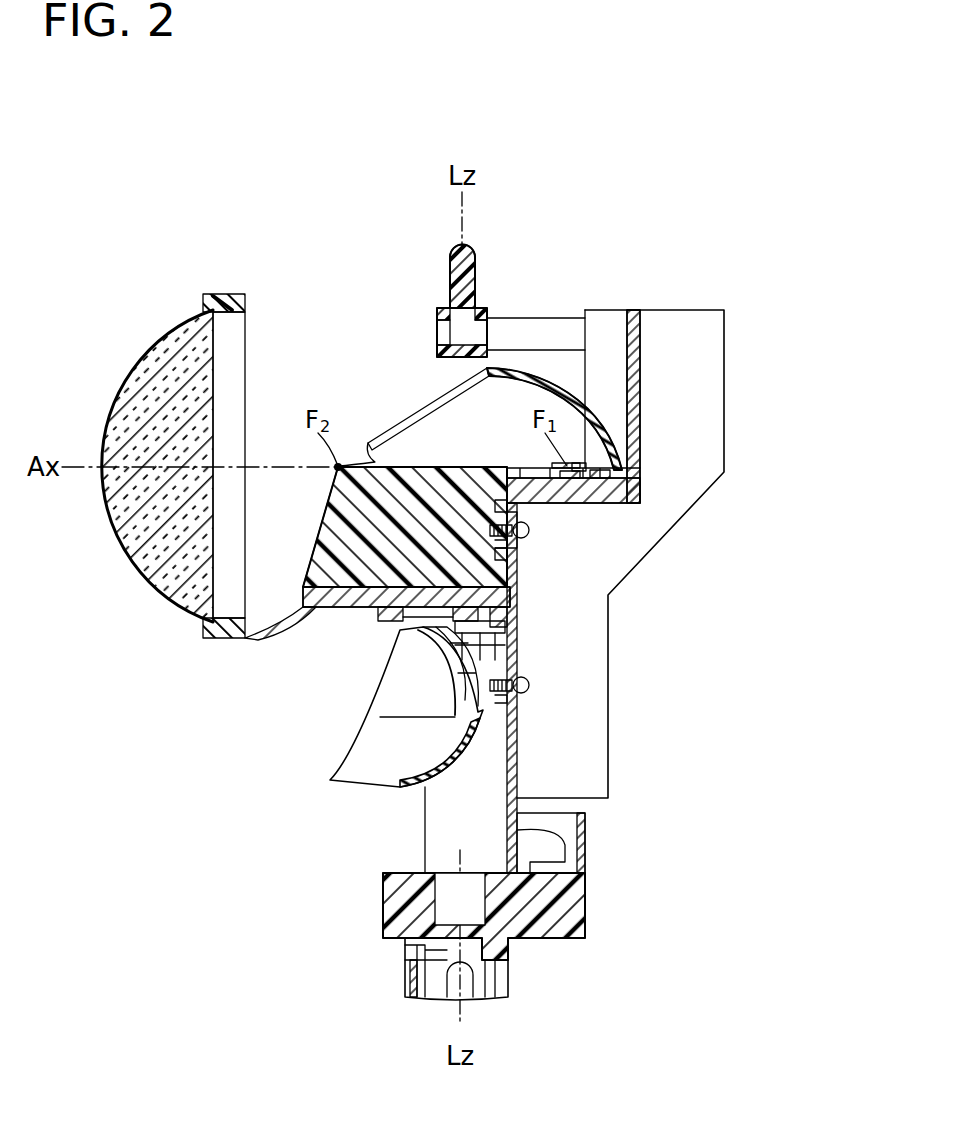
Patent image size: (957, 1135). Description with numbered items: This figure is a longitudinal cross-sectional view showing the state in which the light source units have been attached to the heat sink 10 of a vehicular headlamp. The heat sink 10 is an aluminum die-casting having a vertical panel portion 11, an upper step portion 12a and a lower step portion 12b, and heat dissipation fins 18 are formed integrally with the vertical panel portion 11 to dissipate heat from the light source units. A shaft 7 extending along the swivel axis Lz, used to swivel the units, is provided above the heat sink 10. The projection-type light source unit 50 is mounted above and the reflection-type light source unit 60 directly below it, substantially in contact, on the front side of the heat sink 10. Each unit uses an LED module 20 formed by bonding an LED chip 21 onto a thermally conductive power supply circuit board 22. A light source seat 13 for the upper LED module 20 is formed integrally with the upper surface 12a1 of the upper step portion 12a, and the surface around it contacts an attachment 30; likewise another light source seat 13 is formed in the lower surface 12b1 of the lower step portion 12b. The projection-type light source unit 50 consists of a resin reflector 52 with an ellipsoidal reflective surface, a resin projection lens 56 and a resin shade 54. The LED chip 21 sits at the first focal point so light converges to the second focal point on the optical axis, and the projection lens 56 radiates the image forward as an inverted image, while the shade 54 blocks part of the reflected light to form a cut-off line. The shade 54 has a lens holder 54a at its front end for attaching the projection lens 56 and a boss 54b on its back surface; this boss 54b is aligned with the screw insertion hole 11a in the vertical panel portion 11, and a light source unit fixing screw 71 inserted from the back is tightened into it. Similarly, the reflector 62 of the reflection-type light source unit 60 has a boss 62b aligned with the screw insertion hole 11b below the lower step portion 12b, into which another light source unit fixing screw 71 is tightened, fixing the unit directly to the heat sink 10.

The shaft 7 is at (480, 243).
The heat sink 10 is at (610, 656).
The vertical panel portion 11 is at (633, 427).
The screw insertion hole 11a is at (528, 528).
The screw insertion hole 11b is at (528, 683).
The upper step portion 12a is at (638, 500).
The upper surface 12a1 is at (638, 480).
The lower step portion 12b is at (345, 607).
The lower surface 12b1 is at (320, 610).
The light source seat 13 is at (617, 497).
The heat dissipation fins 18 is at (708, 303).
The LED module 20 is at (623, 268).
The LED chip 21 is at (563, 468).
The power supply circuit board 22 is at (395, 641).
The attachment 30 is at (634, 402).
The projection-type light source unit 50 is at (365, 196).
The reflector 52 is at (403, 413).
The shade 54 is at (356, 466).
The lens holder 54a is at (215, 297).
The boss 54b is at (524, 540).
The projection lens 56 is at (180, 340).
The reflection-type light source unit 60 is at (488, 741).
The reflector 62 is at (360, 790).
The boss 62b is at (530, 712).
The light source unit fixing screw 71 is at (526, 536).